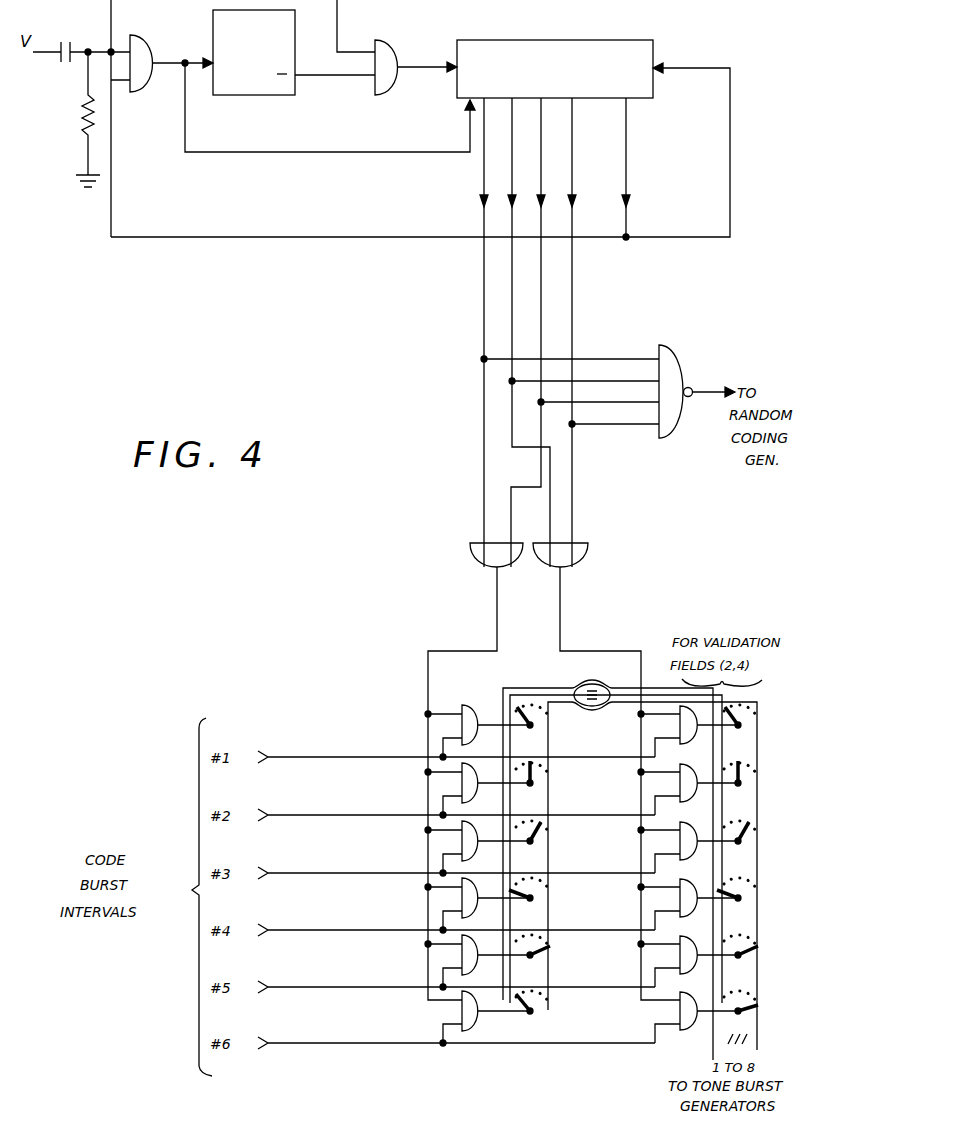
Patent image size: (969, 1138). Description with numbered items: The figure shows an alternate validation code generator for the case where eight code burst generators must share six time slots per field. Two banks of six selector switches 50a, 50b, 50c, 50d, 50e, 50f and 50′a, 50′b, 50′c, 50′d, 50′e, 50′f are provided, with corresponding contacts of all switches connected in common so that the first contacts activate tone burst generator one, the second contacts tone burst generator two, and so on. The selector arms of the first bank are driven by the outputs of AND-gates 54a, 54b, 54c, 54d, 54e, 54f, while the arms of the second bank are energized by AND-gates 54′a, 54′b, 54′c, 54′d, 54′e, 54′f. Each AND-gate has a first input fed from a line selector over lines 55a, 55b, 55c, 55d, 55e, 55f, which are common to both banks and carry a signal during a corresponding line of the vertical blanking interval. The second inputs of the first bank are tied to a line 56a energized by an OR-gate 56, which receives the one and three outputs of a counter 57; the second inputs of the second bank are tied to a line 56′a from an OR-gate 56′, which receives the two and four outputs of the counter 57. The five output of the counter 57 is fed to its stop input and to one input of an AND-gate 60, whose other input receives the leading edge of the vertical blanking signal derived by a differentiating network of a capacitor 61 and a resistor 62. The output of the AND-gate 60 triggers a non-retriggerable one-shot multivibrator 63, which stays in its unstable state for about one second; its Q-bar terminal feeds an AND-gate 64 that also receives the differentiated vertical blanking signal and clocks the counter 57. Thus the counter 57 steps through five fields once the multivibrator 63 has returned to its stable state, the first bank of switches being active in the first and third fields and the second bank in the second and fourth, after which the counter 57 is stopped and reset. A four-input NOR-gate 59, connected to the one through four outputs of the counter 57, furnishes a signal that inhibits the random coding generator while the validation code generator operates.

The counter 57 is at (645, 27).
The NOR-gate 59 is at (666, 440).
The AND-gate 60 is at (148, 43).
The capacitor 61 is at (86, 26).
The resistor 62 is at (80, 114).
The one-shot multivibrator 63 is at (262, 100).
The AND-gate 64 is at (395, 50).
The OR-gate 56 is at (478, 560).
The OR-gate 56′ is at (588, 556).
The line 56a is at (497, 626).
The line 56′a is at (560, 614).
The line 55a is at (386, 741).
The line 55b is at (386, 799).
The line 55c is at (386, 857).
The line 55d is at (386, 914).
The line 55e is at (386, 971).
The line 55f is at (386, 1027).
The AND-gate 54a is at (477, 732).
The AND-gate 54b is at (477, 790).
The AND-gate 54c is at (477, 848).
The AND-gate 54d is at (477, 905).
The AND-gate 54e is at (477, 962).
The AND-gate 54f is at (485, 1018).
The AND-gate 54′a is at (688, 731).
The AND-gate 54′b is at (688, 789).
The AND-gate 54′c is at (688, 847).
The AND-gate 54′d is at (688, 904).
The AND-gate 54′e is at (688, 961).
The AND-gate 54′f is at (696, 1017).
The selector switch 50a is at (582, 742).
The selector switch 50b is at (582, 800).
The selector switch 50c is at (582, 858).
The selector switch 50d is at (582, 915).
The selector switch 50e is at (582, 972).
The selector switch 50f is at (582, 1014).
The selector switch 50′a is at (794, 738).
The selector switch 50′b is at (794, 796).
The selector switch 50′c is at (794, 854).
The selector switch 50′d is at (794, 911).
The selector switch 50′e is at (794, 968).
The selector switch 50′f is at (794, 1008).